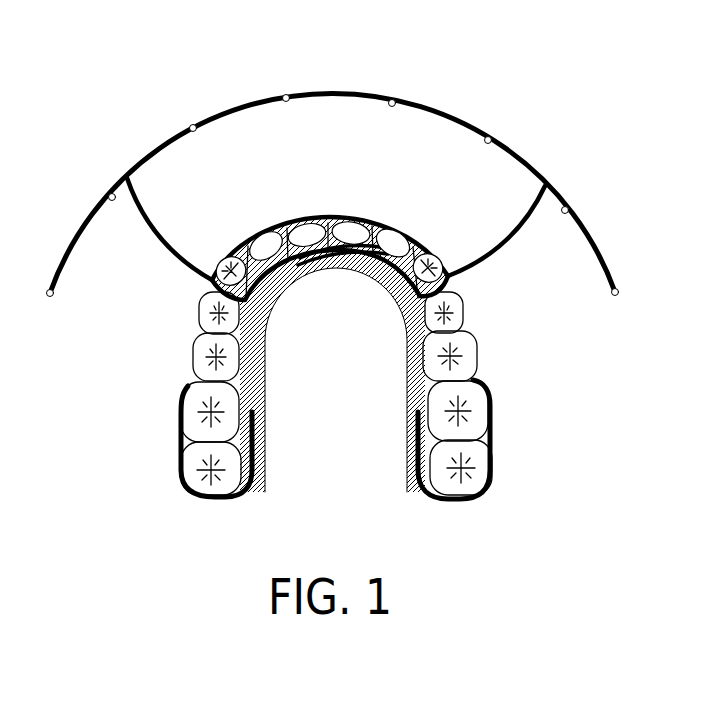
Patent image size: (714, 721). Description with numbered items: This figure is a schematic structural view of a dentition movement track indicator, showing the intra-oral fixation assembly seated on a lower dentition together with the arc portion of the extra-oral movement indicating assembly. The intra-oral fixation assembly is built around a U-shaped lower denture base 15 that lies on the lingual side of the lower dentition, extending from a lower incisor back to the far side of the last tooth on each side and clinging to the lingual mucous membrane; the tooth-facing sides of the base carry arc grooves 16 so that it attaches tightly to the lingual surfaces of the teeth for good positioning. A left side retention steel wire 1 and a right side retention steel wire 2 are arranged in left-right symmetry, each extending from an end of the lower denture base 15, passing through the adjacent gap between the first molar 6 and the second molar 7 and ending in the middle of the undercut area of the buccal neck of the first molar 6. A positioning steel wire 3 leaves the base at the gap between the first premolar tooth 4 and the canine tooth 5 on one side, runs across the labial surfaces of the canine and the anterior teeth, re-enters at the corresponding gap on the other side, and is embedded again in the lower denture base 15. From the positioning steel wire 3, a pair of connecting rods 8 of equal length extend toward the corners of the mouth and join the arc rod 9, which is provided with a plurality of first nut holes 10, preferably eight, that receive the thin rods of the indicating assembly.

The left side retention steel wire 1 is at (176, 420).
The right side retention steel wire 2 is at (485, 380).
The positioning steel wire 3 is at (343, 213).
The first premolar tooth 4 is at (464, 311).
The canine tooth 5 is at (430, 250).
The first molar 6 is at (490, 412).
The second molar 7 is at (497, 457).
The connecting rod 8 is at (529, 200).
The arc rod 9 is at (436, 108).
The first nut hole 10 is at (287, 96).
The lower denture base 15 is at (408, 382).
The arc groove 16 is at (402, 328).